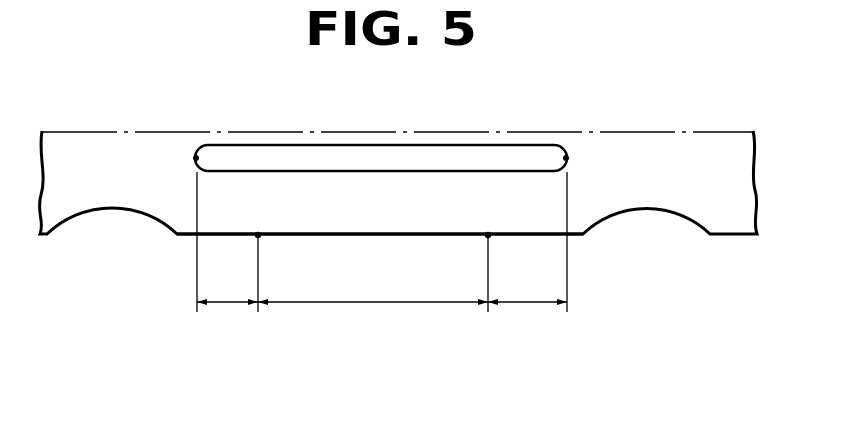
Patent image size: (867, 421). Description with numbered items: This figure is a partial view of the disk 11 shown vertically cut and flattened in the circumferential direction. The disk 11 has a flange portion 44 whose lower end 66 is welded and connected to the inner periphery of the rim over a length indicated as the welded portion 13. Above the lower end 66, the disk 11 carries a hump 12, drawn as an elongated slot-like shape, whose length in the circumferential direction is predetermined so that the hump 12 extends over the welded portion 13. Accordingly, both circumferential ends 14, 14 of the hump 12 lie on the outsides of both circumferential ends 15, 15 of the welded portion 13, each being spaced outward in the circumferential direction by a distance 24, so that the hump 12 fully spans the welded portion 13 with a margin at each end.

The disk 11 is at (733, 228).
The hump 12 is at (226, 158).
The welded portion 13 is at (368, 305).
The circumferential ends of the hump 14 is at (193, 157).
The circumferential ends of the welded portion 15 is at (258, 238).
The distances 24 is at (228, 305).
The flange portion 44 is at (382, 195).
The lower end of the flange portion 66 is at (437, 237).